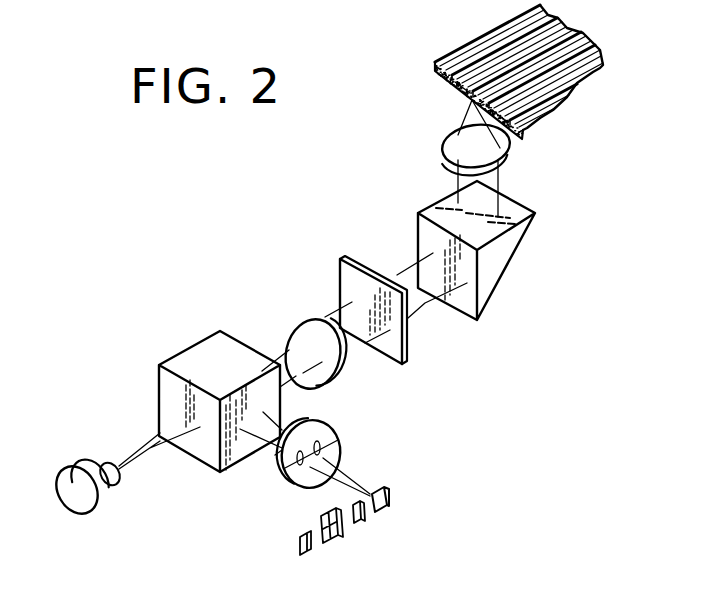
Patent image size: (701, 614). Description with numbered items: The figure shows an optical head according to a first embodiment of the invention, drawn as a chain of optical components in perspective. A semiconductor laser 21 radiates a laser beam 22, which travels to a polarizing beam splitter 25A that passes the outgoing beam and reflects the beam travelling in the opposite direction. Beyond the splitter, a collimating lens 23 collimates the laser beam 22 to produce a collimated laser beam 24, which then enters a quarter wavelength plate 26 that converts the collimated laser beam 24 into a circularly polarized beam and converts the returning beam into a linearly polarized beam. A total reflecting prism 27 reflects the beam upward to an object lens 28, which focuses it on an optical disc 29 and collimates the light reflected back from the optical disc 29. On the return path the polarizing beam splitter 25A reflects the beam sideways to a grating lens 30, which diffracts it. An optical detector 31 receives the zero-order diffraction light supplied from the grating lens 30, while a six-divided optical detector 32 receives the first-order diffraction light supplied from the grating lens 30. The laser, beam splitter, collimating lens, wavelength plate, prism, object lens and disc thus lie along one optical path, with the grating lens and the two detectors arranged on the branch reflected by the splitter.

The semiconductor laser 21 is at (83, 502).
The laser beam 22 is at (140, 450).
The collimating lens 23 is at (300, 335).
The collimated laser beam 24 is at (328, 313).
The polarizing beam splitter 25A is at (192, 360).
The ¼ wavelength plate 26 is at (340, 258).
The total reflecting prism 27 is at (490, 287).
The object lens 28 is at (510, 157).
The optical disc 29 is at (437, 62).
The grating lens 30 is at (337, 418).
The optical detector 31 is at (390, 495).
The six-divided optical detector 32 is at (372, 530).